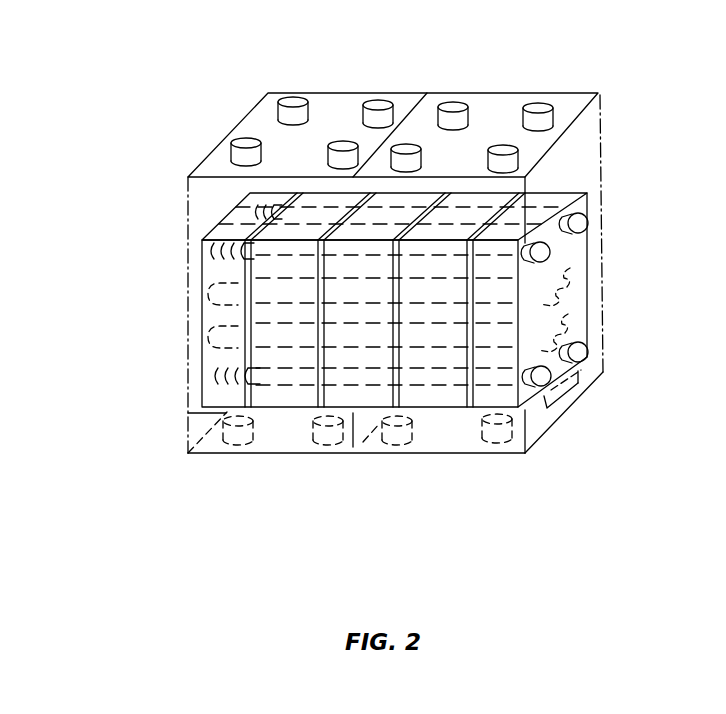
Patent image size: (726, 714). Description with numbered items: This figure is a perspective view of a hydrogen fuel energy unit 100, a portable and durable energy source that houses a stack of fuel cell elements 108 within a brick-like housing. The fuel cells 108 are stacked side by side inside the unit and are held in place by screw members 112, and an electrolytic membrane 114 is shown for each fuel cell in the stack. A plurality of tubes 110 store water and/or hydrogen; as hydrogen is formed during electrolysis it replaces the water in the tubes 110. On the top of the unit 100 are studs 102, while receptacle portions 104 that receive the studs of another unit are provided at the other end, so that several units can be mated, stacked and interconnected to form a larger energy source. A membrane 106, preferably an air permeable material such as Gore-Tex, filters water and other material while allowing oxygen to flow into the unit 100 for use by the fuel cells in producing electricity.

The hydrogen fuel energy unit 100 is at (128, 133).
The studs 102 is at (308, 100).
The receptacle portions 104 is at (392, 448).
The membrane 106 is at (580, 388).
The fuel cell elements 108 is at (278, 403).
The tubes 110 is at (542, 305).
The screw members 112 is at (550, 253).
The electrolytic membrane 114 is at (245, 316).